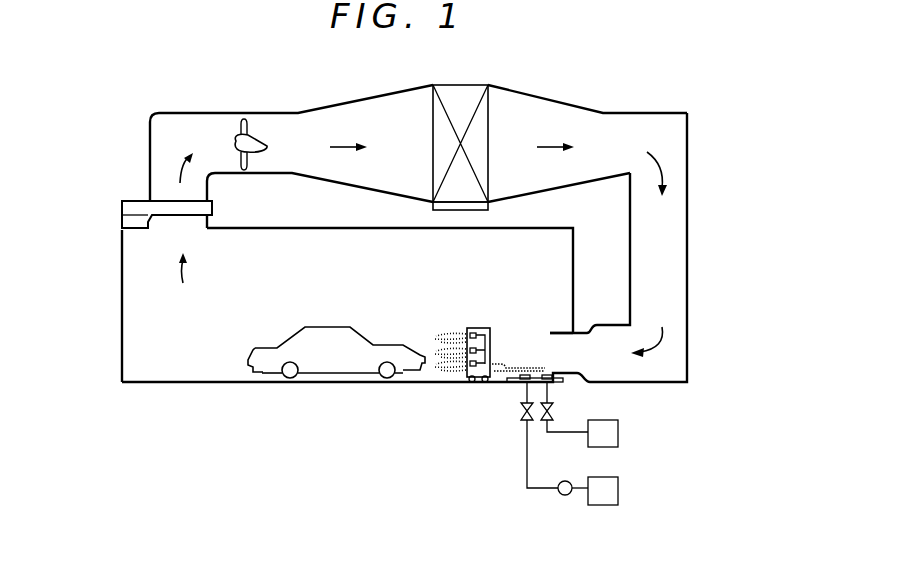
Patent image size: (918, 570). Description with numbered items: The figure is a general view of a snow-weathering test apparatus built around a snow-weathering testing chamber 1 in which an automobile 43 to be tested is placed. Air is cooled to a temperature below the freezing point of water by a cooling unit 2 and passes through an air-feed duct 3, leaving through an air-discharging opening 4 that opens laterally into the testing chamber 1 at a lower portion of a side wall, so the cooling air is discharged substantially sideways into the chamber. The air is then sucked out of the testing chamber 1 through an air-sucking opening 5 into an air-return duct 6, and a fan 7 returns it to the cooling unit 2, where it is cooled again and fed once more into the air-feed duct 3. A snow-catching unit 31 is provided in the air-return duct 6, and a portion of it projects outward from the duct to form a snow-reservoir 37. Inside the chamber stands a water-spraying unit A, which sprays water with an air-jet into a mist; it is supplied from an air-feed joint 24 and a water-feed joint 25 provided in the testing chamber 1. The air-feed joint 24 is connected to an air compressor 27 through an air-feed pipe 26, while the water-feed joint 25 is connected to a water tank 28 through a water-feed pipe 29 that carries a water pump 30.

The snow-weathering testing chamber 1 is at (212, 365).
The cooling unit 2 is at (468, 97).
The air-feed duct 3 is at (672, 212).
The air-discharging opening 4 is at (548, 348).
The air-sucking opening 5 is at (168, 233).
The air-return duct 6 is at (179, 132).
The fan 7 is at (252, 137).
The air-feed joint 24 is at (557, 382).
The water-feed joint 25 is at (506, 383).
The air-feed pipe 26 is at (569, 432).
The air compressor 27 is at (613, 428).
The water tank 28 is at (613, 483).
The water-feed pipe 29 is at (523, 466).
The water pump 30 is at (565, 496).
The snow-catching unit 31 is at (165, 200).
The snow-reservoir 37 is at (121, 217).
The automobile 43 is at (360, 358).
The water-spraying unit A is at (488, 326).